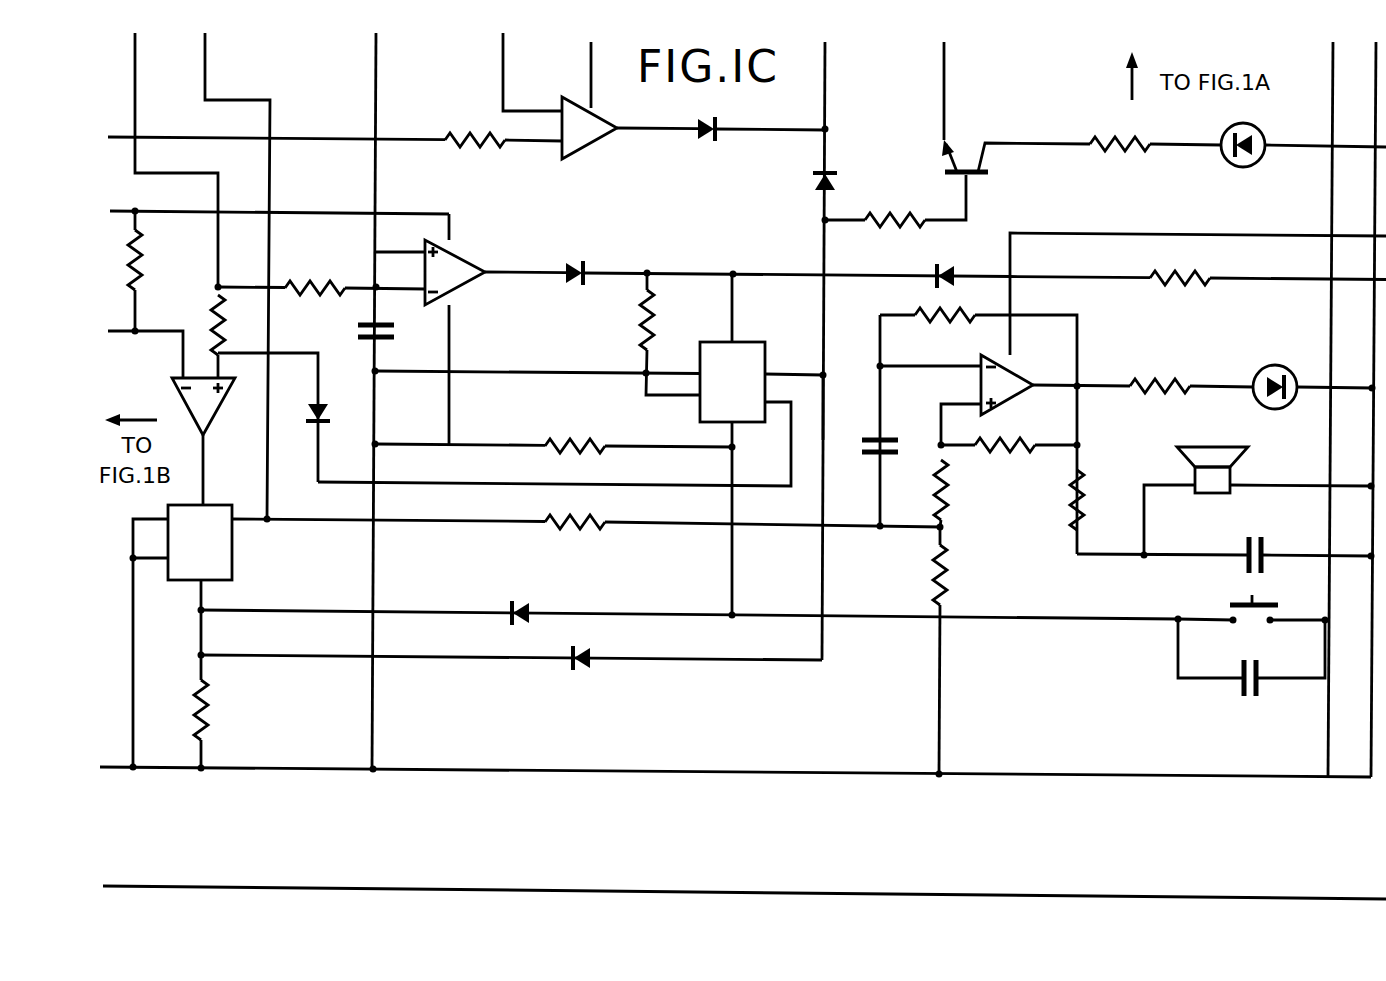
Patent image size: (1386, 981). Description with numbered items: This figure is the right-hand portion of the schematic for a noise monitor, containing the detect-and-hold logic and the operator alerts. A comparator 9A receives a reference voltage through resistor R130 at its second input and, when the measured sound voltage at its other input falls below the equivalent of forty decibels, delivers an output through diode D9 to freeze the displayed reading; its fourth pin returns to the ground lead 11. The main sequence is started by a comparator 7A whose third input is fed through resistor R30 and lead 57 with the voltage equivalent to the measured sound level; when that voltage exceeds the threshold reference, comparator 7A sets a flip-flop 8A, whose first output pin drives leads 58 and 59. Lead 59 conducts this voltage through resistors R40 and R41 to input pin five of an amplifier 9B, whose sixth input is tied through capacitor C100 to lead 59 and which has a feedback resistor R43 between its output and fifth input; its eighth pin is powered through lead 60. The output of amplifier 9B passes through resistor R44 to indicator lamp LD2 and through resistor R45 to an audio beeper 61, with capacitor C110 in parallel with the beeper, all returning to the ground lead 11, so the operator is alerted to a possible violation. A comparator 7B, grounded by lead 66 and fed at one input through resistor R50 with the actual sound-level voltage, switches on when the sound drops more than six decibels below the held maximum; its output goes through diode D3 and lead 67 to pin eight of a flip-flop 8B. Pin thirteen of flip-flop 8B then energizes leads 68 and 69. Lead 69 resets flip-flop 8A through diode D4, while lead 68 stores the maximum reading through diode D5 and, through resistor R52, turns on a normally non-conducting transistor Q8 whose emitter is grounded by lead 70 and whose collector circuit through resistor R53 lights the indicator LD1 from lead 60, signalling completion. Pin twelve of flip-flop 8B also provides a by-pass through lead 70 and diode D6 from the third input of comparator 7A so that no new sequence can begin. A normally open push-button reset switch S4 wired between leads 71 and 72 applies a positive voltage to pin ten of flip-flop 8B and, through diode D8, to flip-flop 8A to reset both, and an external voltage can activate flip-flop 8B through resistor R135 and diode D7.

The ground lead 11 is at (1097, 775).
The lead 57 is at (203, 173).
The lead 58 is at (268, 490).
The lead 59 is at (320, 521).
The lead 60 is at (1162, 233).
The audio beeper 61 is at (1235, 471).
The lead 66 is at (450, 327).
The lead 67 is at (681, 272).
The lead 68 is at (823, 327).
The lead 69 is at (823, 397).
The lead 70 is at (791, 468).
The lead 71 is at (1330, 605).
The lead 72 is at (1108, 620).
The resistor R130 is at (475, 135).
The resistor R50 is at (320, 282).
The resistor R30 is at (212, 320).
The resistor R40 is at (582, 532).
The resistor R52 is at (880, 215).
The resistor R53 is at (1126, 151).
The resistor R135 is at (1197, 284).
The resistor R41 is at (950, 496).
The resistor R43 is at (1007, 451).
The resistor R44 is at (1169, 380).
The resistor R45 is at (1088, 498).
The capacitor C100 is at (895, 438).
The capacitor C110 is at (1245, 548).
The diode D3 is at (570, 268).
The diode D4 is at (583, 673).
The diode D5 is at (812, 176).
The diode D6 is at (325, 425).
The diode D7 is at (951, 270).
The diode D8 is at (507, 605).
The diode D9 is at (718, 137).
The transistor Q8 is at (989, 172).
The light LD1 is at (1248, 168).
The indicator lamp LD2 is at (1275, 366).
The push-button reset switch S4 is at (1248, 603).
The comparator 7A is at (199, 431).
The comparator 7B is at (447, 268).
The flip-flop 8A is at (191, 630).
The flip-flop circuit 8B is at (728, 384).
The comparator 9A is at (583, 128).
The amplifier 9B is at (1002, 384).